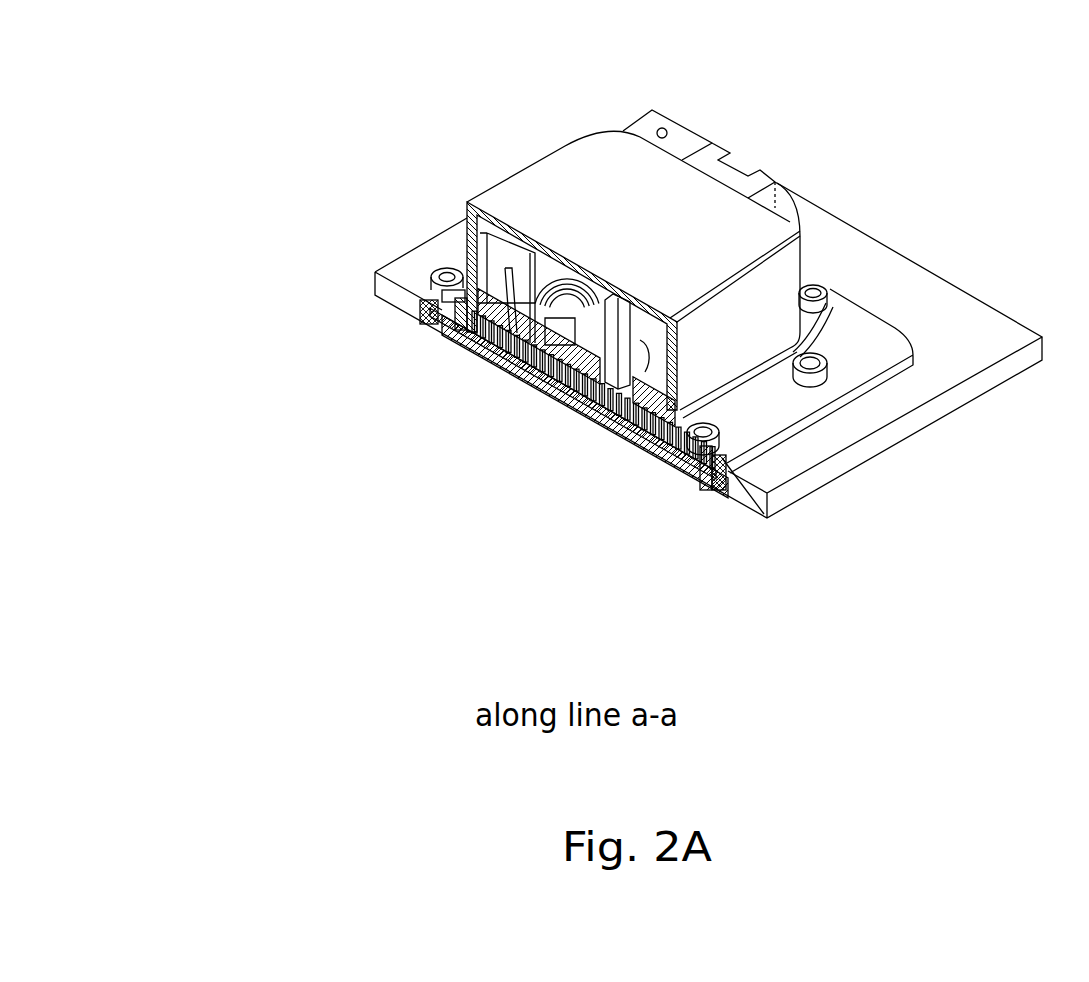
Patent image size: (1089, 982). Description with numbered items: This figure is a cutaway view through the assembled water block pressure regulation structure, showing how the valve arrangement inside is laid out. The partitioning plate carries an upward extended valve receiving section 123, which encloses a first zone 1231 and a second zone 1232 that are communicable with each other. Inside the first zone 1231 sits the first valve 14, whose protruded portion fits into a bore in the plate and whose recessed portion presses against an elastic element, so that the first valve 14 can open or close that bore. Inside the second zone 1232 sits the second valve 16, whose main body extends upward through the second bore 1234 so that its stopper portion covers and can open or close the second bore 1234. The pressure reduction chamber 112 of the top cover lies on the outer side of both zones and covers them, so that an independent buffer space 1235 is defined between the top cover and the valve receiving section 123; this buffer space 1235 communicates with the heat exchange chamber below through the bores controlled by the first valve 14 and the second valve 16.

The pressure reduction chamber 112 is at (528, 232).
The second zone 1232 is at (498, 255).
The second valve 16 is at (373, 292).
The second bore 1234 is at (540, 333).
The first valve 14 is at (548, 377).
The first zone 1231 is at (605, 380).
The valve receiving section 123 is at (660, 393).
The buffer space 1235 is at (640, 337).